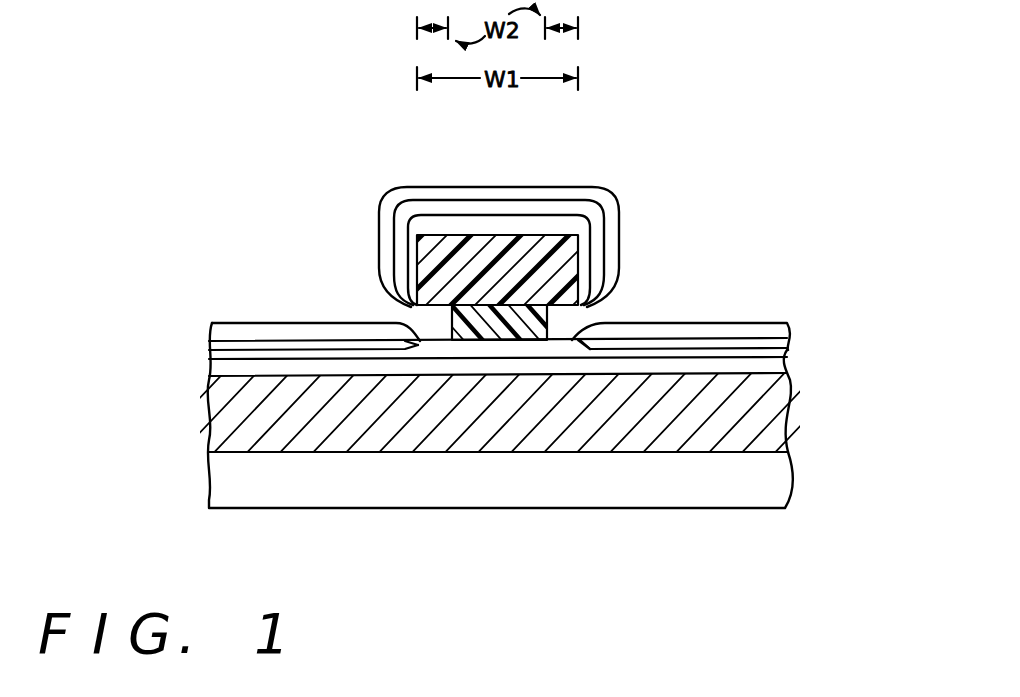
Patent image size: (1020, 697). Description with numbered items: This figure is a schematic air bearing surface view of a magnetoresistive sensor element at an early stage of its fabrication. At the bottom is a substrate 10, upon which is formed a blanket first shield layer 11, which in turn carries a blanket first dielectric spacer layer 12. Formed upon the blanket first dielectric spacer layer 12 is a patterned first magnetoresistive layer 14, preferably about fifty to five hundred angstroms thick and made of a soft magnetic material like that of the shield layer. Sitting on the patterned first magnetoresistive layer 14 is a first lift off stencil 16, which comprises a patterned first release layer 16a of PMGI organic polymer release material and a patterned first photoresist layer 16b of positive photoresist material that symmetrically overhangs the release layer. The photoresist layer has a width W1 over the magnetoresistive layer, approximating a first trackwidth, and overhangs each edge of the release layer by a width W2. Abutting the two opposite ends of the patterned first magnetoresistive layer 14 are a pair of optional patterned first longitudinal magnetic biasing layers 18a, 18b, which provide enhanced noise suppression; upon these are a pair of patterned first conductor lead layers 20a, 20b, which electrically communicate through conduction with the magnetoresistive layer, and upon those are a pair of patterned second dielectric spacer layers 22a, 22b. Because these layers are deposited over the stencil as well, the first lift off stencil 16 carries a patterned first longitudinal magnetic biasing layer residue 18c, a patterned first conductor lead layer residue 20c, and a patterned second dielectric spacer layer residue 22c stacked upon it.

The substrate 10 is at (228, 486).
The blanket first shield layer 11 is at (232, 423).
The blanket first dielectric spacer layer 12 is at (215, 368).
The patterned first magnetoresistive (MR) layer 14 is at (425, 348).
The first lift off stencil 16 is at (593, 566).
The patterned first release layer 16a is at (462, 308).
The patterned first photoresist layer 16b is at (556, 285).
The patterned first longitudinal magnetic biasing layer 18a is at (218, 351).
The patterned first longitudinal magnetic biasing layer 18b is at (787, 358).
The patterned first longitudinal magnetic biasing layer residue 18c is at (436, 228).
The patterned first conductor lead layer 20a is at (217, 344).
The patterned first conductor lead layer 20b is at (789, 342).
The patterned first conductor lead layer residue 20c is at (480, 205).
The patterned second dielectric spacer layer 22a is at (243, 330).
The patterned second dielectric spacer layer 22b is at (788, 330).
The patterned second dielectric spacer layer residue 22c is at (544, 192).